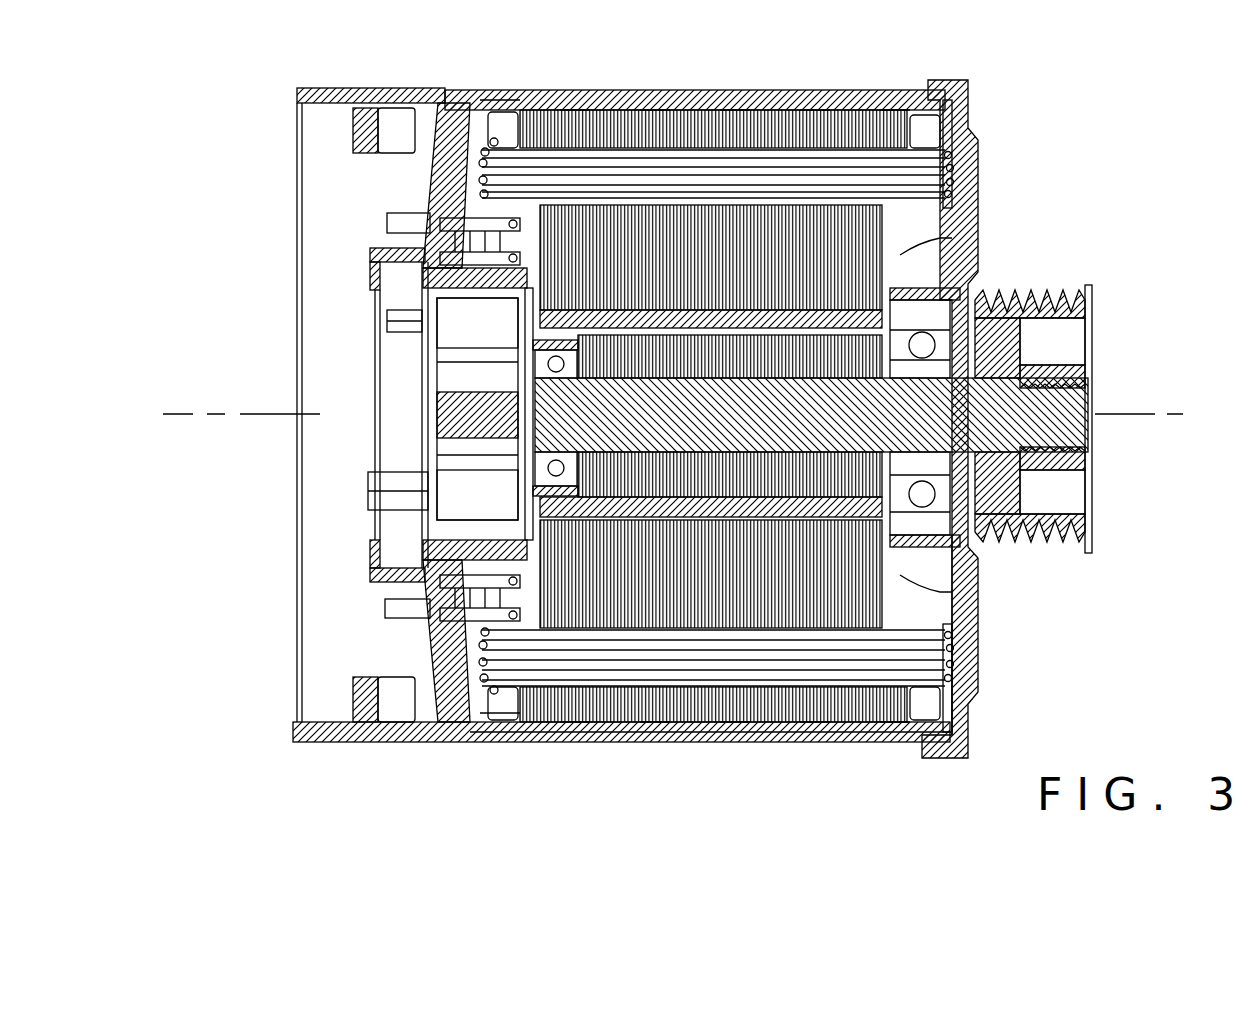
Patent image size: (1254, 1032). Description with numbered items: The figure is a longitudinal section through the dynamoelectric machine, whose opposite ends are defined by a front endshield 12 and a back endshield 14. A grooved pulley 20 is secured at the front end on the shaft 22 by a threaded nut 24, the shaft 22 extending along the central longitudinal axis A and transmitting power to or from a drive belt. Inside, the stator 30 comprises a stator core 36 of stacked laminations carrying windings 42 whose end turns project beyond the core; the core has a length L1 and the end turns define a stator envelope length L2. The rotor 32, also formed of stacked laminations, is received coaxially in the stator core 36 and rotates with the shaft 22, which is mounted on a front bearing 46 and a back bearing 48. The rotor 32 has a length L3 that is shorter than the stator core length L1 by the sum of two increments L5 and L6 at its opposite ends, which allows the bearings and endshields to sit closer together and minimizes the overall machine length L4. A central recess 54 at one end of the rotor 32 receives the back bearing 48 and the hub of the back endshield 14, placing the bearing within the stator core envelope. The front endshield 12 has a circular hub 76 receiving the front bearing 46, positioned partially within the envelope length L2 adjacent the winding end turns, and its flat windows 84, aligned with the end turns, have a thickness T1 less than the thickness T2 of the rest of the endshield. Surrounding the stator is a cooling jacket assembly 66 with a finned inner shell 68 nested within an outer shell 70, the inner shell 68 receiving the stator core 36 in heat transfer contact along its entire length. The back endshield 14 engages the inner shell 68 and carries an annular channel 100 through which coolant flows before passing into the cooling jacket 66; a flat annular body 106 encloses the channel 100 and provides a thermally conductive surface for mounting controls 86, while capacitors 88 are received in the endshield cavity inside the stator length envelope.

The back endshield 14 is at (318, 88).
The annular channel 100 is at (392, 126).
The controls 86 is at (360, 140).
The windings 42 is at (480, 172).
The central recess 54 is at (438, 298).
The capacitors 88 is at (530, 358).
The back bearing 48 is at (370, 490).
The annular body 106 is at (380, 578).
The front endshield 12 is at (972, 97).
The stator core 36 is at (905, 130).
The window 84 is at (940, 172).
The grooved pulley 20 is at (1094, 302).
The shaft 22 is at (1093, 408).
The threaded nut 24 is at (1070, 474).
The front bearing 46 is at (970, 590).
The circular hub 76 is at (978, 625).
The rotor 32 is at (840, 632).
The stator 30 is at (745, 732).
The cooling jacket assembly 66 is at (680, 86).
The outer shell 70 is at (706, 95).
The inner shell 68 is at (776, 100).
The window thickness T1 is at (982, 178).
The endshield thickness T2 is at (982, 257).
The central longitudinal axis A is at (180, 413).
The stator core length L1 is at (907, 85).
The stator envelope length L2 is at (942, 285).
The rotor length L3 is at (882, 800).
The overall machine length L4 is at (305, 813).
The first increment L5 is at (293, 830).
The second increment L6 is at (963, 830).